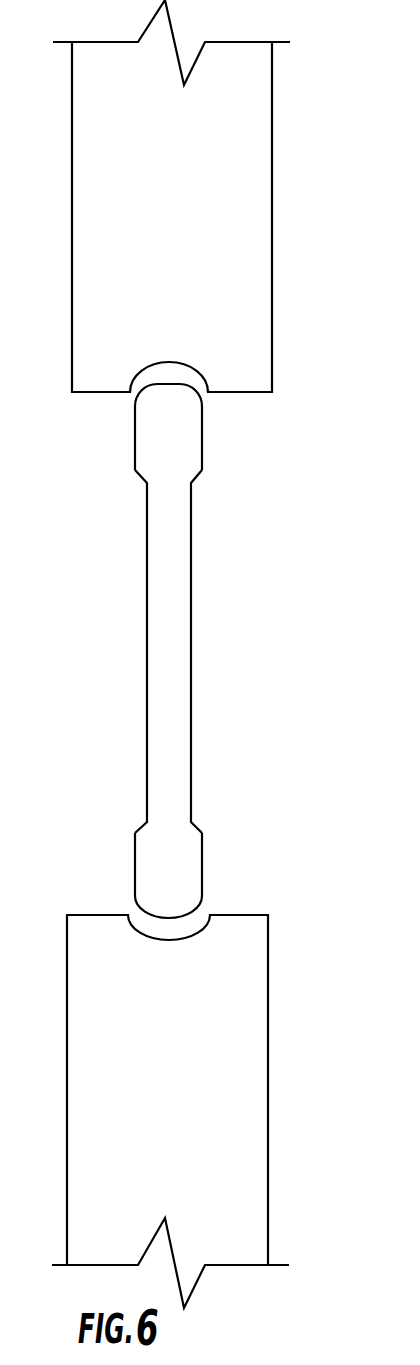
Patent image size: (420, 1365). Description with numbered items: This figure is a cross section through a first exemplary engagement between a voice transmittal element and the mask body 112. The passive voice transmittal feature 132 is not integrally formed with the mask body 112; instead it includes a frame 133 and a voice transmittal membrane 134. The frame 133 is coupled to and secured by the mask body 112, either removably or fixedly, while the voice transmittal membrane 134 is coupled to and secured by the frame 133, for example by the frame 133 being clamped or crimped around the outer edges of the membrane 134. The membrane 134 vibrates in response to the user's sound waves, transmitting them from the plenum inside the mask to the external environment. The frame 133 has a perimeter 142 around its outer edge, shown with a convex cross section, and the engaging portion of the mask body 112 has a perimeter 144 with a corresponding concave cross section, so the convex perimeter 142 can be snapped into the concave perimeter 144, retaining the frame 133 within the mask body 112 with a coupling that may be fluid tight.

The mask body 112 is at (243, 162).
The passive voice transmittal feature 132 is at (190, 651).
The frame 133 is at (203, 451).
The voice transmittal membrane 134 is at (191, 680).
The perimeter 142 is at (209, 392).
The perimeter 144 is at (133, 384).